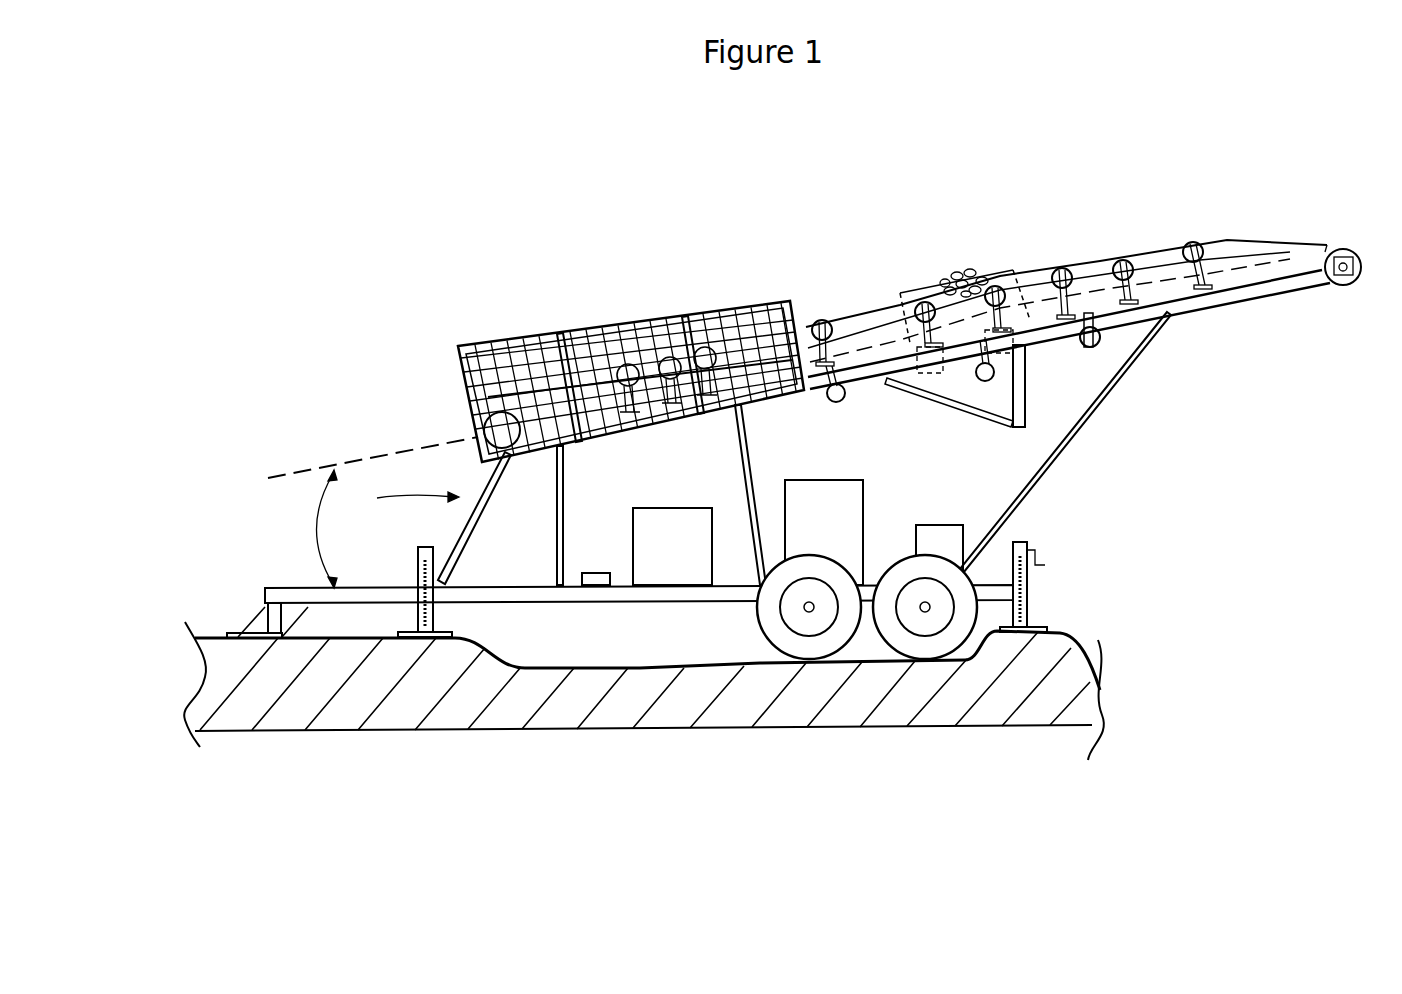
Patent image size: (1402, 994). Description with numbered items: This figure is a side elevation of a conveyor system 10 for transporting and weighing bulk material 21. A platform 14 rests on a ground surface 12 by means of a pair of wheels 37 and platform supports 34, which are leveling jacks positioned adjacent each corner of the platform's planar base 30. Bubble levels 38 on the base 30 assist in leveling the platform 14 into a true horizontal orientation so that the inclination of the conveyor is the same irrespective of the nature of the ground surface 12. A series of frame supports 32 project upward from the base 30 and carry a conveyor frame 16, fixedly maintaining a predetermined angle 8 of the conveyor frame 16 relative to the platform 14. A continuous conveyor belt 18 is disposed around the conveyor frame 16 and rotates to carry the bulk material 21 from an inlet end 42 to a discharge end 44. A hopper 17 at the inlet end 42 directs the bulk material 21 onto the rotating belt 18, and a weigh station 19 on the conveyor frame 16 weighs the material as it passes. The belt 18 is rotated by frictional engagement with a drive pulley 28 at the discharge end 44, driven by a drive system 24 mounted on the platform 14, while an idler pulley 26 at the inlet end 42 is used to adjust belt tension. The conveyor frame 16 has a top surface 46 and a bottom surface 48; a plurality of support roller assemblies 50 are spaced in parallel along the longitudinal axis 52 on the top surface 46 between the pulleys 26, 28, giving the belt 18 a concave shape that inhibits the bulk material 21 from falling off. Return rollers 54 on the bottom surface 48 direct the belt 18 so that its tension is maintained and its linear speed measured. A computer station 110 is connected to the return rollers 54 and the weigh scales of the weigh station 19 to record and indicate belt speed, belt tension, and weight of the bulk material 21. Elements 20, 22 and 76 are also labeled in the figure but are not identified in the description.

The predetermined angle 8 is at (318, 526).
The conveyor system 10 is at (733, 195).
The ground surface 12 is at (835, 662).
The platform 14 is at (539, 643).
The conveyor frame 16 is at (1271, 262).
The hopper 17 is at (740, 300).
The continuous conveyor belt 18 is at (1026, 268).
The weigh station 19 is at (905, 283).
The roller 20 is at (1123, 258).
The bulk material 21 is at (950, 268).
The support leg 22 is at (1047, 350).
The drive system 24 is at (683, 492).
The idler pulley 26 is at (467, 396).
The drive pulley 28 is at (1343, 247).
The planar base 30 is at (468, 603).
The frame supports 32 is at (483, 505).
The platform supports 34 is at (417, 618).
The wheels 37 is at (913, 667).
The bubble levels 38 is at (593, 590).
The inlet end 42 is at (407, 512).
The discharge end 44 is at (1357, 295).
The top surface 46 is at (1195, 240).
The bottom surface 48 is at (1200, 310).
The support roller assemblies 50 is at (822, 314).
The longitudinal axis 52 is at (360, 452).
The return rollers 54 is at (1105, 385).
The mesh screen 76 is at (575, 345).
The computer station 110 is at (1093, 349).